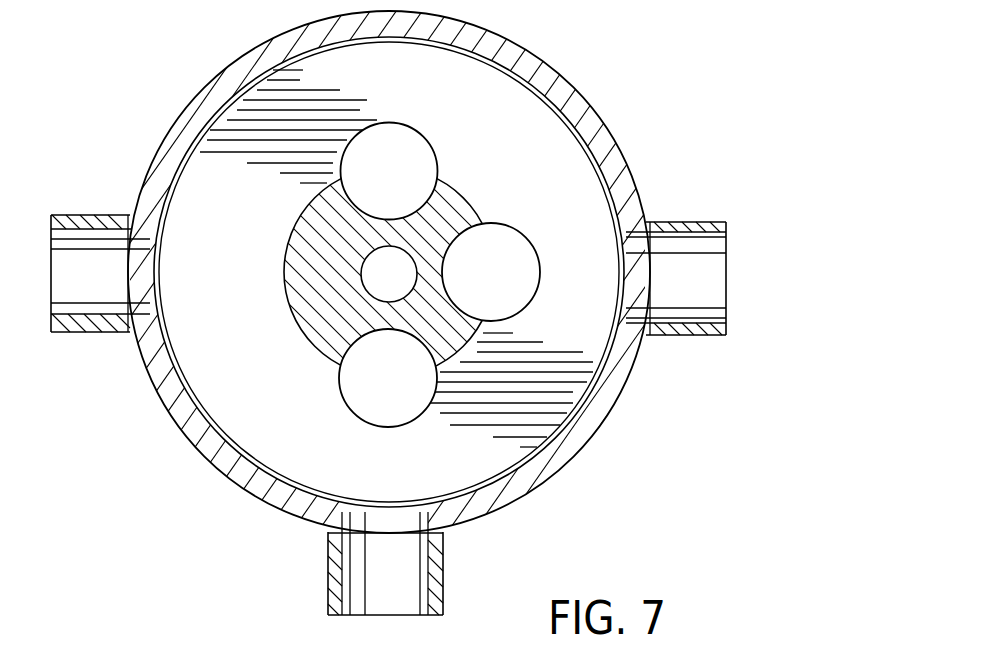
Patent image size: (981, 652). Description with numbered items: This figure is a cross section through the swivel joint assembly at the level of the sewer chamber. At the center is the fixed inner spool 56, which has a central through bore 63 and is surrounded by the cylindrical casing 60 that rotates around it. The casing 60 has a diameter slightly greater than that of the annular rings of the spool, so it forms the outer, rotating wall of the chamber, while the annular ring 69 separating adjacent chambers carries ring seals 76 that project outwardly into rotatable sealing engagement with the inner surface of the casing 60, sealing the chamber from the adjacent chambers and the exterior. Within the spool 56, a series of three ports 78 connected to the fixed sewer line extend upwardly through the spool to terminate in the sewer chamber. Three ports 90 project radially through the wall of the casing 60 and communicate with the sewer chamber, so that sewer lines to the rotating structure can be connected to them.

The fixed inner spool 56 is at (458, 200).
The casing 60 is at (615, 402).
The central through bore 63 is at (372, 273).
The annular ring 69 is at (572, 178).
The ring seal 76 is at (535, 462).
The ports 78 is at (404, 171).
The ports 90 is at (93, 215).